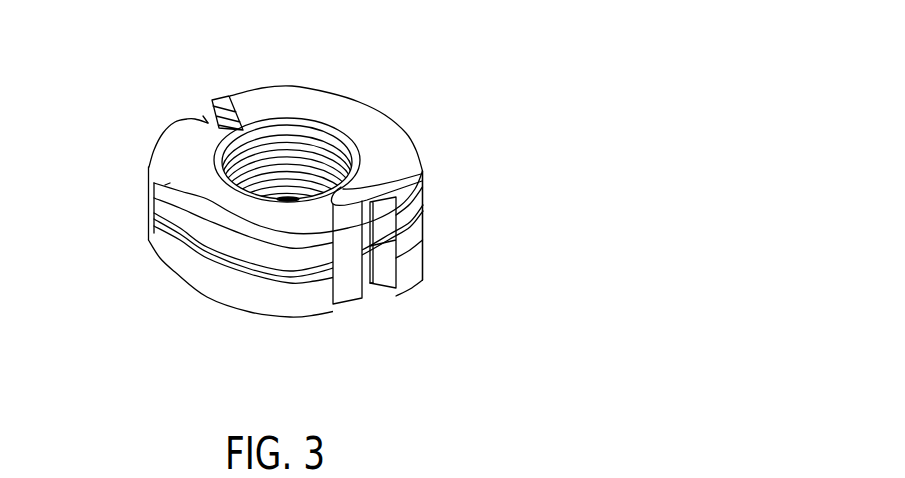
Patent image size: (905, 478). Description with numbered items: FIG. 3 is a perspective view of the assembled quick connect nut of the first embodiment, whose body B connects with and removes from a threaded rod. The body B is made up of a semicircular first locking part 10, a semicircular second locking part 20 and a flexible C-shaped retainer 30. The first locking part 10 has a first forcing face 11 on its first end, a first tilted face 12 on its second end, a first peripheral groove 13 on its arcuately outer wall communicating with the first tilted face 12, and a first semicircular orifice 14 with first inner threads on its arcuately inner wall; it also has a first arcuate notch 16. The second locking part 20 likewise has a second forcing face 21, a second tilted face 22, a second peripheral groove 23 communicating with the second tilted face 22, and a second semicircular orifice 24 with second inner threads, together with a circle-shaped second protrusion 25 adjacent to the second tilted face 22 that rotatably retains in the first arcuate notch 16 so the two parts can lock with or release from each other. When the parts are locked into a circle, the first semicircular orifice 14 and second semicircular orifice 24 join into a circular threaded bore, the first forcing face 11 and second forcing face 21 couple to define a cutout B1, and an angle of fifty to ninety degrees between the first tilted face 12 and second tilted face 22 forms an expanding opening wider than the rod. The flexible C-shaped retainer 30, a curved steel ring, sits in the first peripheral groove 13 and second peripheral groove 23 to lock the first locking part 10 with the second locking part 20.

The first locking part 10 is at (207, 290).
The first forcing face 11 is at (204, 116).
The first tilted face 12 is at (371, 290).
The first peripheral groove 13 is at (173, 254).
The first semicircular orifice 14 is at (232, 182).
The first arcuate notch 16 is at (333, 304).
The second locking part 20 is at (362, 115).
The second forcing face 21 is at (203, 110).
The second tilted face 22 is at (392, 270).
The second peripheral groove 23 is at (424, 230).
The second semicircular orifice 24 is at (293, 134).
The second protrusion 25 is at (398, 188).
The flexible C-shaped retainer 30 is at (307, 282).
The body B is at (459, 92).
The cutout B1 is at (204, 116).